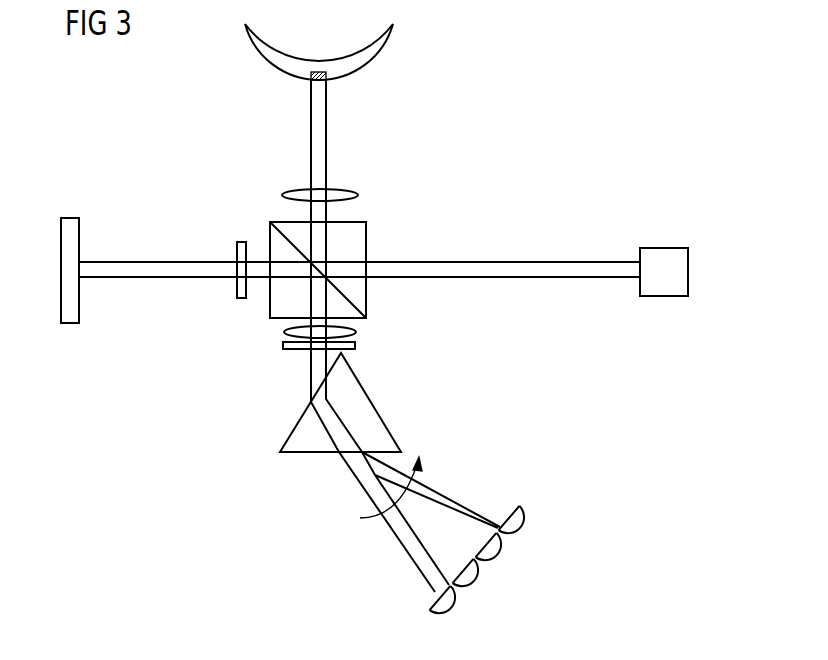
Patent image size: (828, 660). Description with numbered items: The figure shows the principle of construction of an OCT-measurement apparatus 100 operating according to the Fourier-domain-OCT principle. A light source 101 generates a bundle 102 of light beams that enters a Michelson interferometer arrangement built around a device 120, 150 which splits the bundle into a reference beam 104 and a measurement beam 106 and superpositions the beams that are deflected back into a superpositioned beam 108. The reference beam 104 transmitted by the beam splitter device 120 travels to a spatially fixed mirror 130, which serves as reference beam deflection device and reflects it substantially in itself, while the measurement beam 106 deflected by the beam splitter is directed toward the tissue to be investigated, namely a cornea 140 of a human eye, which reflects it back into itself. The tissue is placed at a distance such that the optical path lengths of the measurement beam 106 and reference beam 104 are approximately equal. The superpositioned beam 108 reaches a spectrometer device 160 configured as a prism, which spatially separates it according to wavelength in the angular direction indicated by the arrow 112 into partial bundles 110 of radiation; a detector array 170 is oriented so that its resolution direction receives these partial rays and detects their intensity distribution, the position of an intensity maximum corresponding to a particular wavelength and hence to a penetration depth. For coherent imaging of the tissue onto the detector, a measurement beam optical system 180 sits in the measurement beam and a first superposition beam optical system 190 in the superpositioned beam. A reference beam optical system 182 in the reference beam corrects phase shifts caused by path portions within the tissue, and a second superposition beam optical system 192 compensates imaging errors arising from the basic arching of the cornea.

The OCT-measurement apparatus 100 is at (511, 93).
The light source 101 is at (666, 248).
The bundle of light beams 102 is at (560, 269).
The reference beam 104 is at (142, 267).
The measurement beam 106 is at (311, 130).
The superpositioned beam 108 is at (311, 380).
The partial bundles of radiation 110 is at (458, 495).
The arrow indicating angular direction 112 is at (362, 519).
The beam splitter device 120 is at (392, 278).
The device for splitting and superpositioning beams 150 is at (381, 312).
The mirror 130 is at (72, 217).
The cornea 140 is at (357, 70).
The spectrometer device 160 is at (381, 418).
The detector array 170 is at (529, 501).
The measurement beam optical system 180 is at (358, 195).
The reference beam optical system 182 is at (240, 242).
The first superposition beam optical system 190 is at (284, 332).
The second superposition beam optical system 192 is at (355, 346).